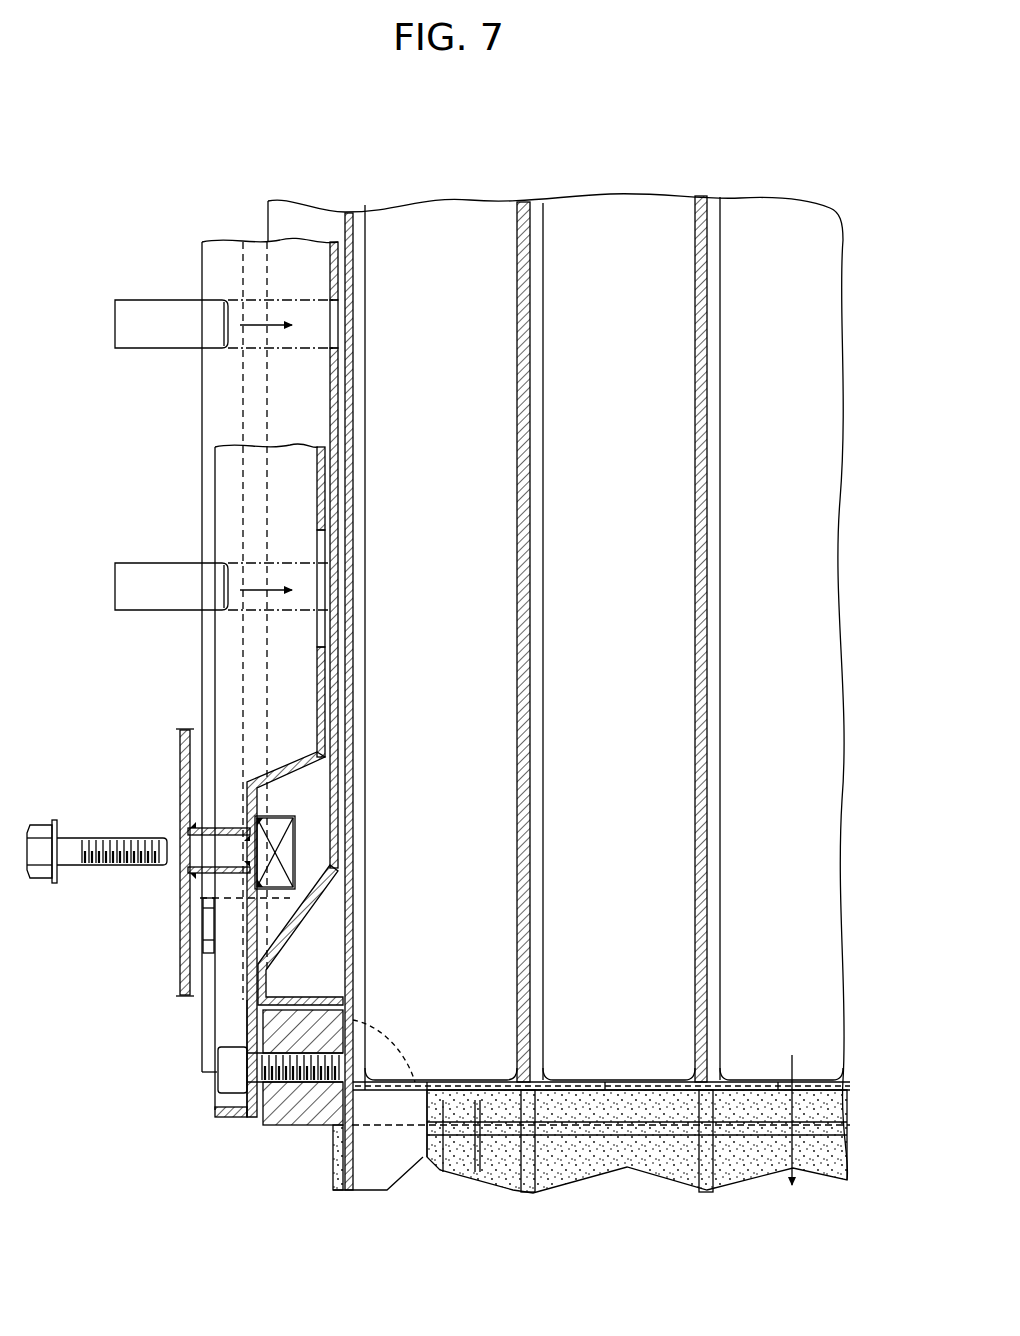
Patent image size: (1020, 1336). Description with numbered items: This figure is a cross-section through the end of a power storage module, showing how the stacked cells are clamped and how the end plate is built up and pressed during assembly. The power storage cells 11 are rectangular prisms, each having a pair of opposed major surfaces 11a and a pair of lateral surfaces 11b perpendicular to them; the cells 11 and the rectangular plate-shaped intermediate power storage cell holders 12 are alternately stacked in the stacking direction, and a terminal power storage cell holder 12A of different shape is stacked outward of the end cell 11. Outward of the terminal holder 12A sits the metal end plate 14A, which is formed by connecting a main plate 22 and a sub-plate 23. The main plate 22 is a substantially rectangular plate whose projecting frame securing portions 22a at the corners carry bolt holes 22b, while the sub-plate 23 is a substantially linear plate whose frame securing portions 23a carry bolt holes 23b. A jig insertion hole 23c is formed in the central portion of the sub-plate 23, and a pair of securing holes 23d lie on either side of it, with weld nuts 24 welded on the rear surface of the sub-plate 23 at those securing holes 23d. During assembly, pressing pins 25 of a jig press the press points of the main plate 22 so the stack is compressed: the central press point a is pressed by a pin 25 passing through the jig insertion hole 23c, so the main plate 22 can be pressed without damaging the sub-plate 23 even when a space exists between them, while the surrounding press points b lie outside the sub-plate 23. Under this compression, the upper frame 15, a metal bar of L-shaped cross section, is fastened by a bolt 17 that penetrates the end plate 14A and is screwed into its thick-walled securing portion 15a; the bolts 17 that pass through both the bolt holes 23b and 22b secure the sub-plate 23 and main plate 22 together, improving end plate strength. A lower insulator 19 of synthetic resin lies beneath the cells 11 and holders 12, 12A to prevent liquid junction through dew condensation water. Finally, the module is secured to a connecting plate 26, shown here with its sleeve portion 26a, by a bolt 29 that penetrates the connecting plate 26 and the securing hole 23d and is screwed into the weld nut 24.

The power storage cell 11 is at (447, 190).
The major surface 11a is at (363, 623).
The lateral surface 11b is at (775, 525).
The intermediate power storage cell holder 12 is at (535, 455).
The terminal power storage cell holder 12A is at (357, 440).
The end plate 14A is at (92, 407).
The upper frame 15 is at (310, 1132).
The securing portion 15a is at (325, 1030).
The bolt 17 is at (230, 1088).
The lower insulator 19 is at (633, 1174).
The main plate 22 is at (199, 393).
The frame securing portion 22a is at (290, 998).
The bolt hole 22b is at (268, 1086).
The sub-plate 23 is at (210, 503).
The frame securing portion 23a is at (245, 1020).
The bolt hole 23b is at (245, 1077).
The jig insertion hole 23c is at (318, 535).
The securing hole 23d is at (262, 848).
The weld nut 24 is at (292, 862).
The pressing pin 25 is at (150, 302).
The connecting plate 26 is at (178, 748).
The sleeve 26a is at (188, 835).
The bolt 29 is at (78, 866).
The press point a is at (318, 600).
The press point b is at (330, 322).